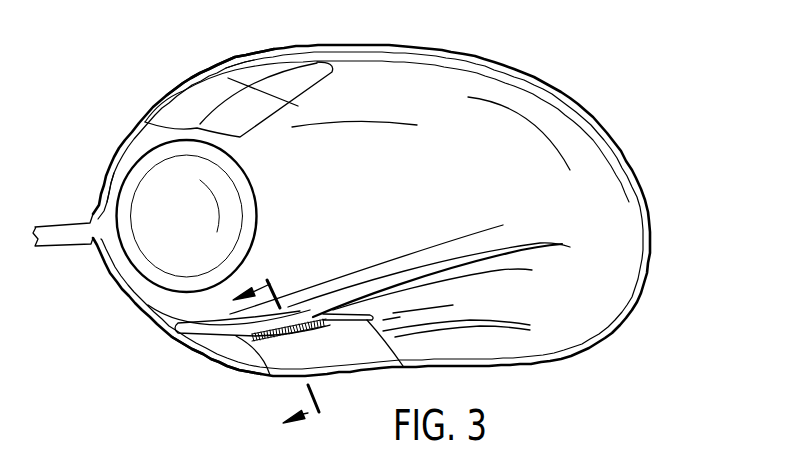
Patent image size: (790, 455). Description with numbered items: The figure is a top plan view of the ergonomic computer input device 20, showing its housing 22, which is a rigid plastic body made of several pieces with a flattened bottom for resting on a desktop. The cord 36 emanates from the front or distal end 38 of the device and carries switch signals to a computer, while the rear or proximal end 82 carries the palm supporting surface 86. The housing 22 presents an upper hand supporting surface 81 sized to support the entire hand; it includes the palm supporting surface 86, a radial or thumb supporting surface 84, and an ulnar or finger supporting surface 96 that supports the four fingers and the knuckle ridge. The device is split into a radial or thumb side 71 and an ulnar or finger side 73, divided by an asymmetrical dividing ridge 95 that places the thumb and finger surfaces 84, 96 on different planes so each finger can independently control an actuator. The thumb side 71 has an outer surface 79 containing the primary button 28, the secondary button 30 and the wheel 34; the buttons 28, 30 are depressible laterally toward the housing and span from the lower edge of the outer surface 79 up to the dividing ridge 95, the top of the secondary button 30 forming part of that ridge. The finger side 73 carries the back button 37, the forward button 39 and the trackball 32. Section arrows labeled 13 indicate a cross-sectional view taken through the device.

The ergonomic computer input device 20 is at (662, 109).
The housing 22 is at (488, 120).
The primary button 28 is at (285, 360).
The secondary button 30 is at (314, 318).
The trackball 32 is at (152, 170).
The wheel 34 is at (310, 317).
The cord 36 is at (57, 247).
The back button 37 is at (187, 107).
The distal end 38 is at (113, 193).
The forward button 39 is at (236, 78).
The thumb side 71 is at (210, 368).
The finger side 73 is at (230, 50).
The outer surface 79 is at (207, 357).
The upper hand supporting surface 81 is at (510, 174).
The proximal end 82 is at (633, 236).
The thumb supporting surface 84 is at (380, 354).
The palm supporting surface 86 is at (605, 259).
The dividing ridge 95 is at (400, 282).
The finger supporting surface 96 is at (352, 100).
The section line 13 is at (301, 336).